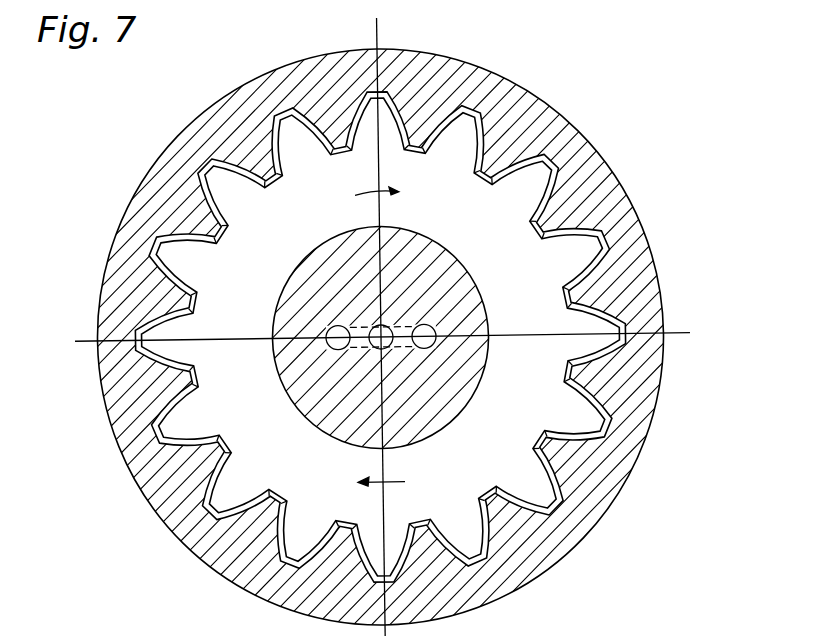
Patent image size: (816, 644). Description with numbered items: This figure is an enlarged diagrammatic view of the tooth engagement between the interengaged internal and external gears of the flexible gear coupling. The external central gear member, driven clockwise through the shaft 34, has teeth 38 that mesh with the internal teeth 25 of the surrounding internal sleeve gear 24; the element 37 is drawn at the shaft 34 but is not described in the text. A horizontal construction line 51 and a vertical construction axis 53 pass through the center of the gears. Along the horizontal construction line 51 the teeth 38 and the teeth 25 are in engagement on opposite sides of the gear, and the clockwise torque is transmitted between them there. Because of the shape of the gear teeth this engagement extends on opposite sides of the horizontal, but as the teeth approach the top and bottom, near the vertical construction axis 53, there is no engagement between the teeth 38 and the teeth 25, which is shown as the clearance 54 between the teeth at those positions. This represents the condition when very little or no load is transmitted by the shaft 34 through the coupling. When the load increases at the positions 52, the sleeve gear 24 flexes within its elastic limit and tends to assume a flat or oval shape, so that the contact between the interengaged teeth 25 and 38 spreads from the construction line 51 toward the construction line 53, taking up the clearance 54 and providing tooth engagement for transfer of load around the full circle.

The internal sleeve gear 24 is at (603, 185).
The teeth of the sleeve gear 25 is at (588, 288).
The shaft 34 is at (460, 398).
The shaft bore surface 37 is at (312, 270).
The teeth of the external gear 38 is at (585, 325).
The horizontal construction line 51 is at (381, 32).
The positions of load increase 52 is at (382, 140).
The vertical construction axis 53 is at (678, 336).
The clearance between the teeth 54 is at (577, 356).